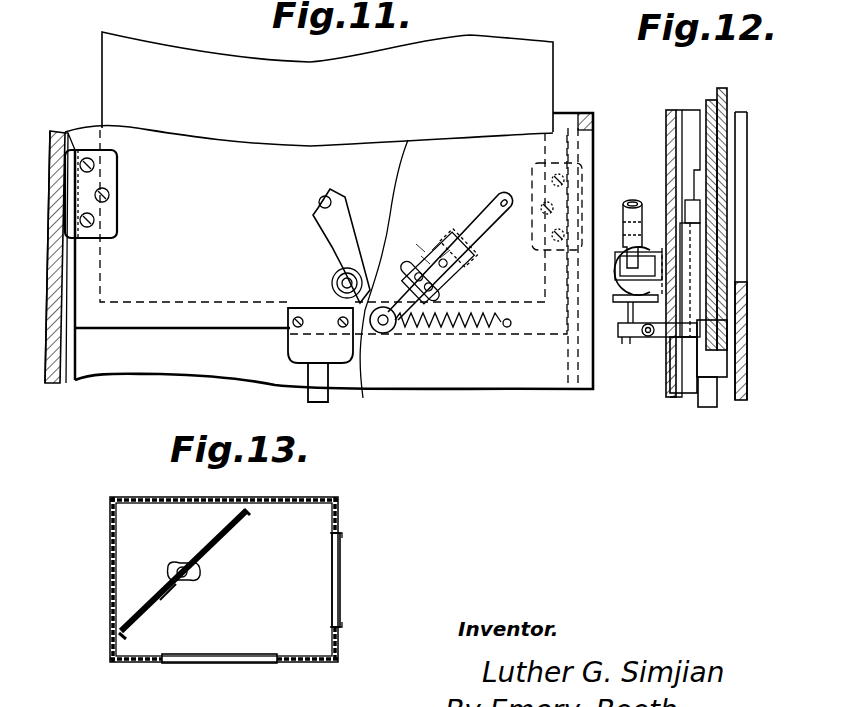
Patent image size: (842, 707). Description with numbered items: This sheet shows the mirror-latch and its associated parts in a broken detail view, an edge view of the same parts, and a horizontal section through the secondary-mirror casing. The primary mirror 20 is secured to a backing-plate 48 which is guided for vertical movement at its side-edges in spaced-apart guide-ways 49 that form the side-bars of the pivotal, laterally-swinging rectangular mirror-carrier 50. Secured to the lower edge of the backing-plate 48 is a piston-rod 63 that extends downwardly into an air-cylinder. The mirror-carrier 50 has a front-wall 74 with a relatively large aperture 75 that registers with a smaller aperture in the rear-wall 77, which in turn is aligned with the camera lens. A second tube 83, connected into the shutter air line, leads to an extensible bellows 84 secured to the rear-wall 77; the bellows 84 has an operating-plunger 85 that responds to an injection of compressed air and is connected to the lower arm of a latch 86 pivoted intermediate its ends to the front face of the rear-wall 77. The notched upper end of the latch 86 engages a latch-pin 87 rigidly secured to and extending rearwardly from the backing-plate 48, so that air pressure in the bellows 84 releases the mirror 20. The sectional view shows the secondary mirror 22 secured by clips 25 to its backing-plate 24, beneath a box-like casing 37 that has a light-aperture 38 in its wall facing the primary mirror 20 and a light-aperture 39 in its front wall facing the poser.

In FIG. 11, the primary mirror 20 is at (542, 71).
In FIG. 12, the primary mirror 20 is at (725, 154).
In FIG. 13, the secondary mirror 22 is at (162, 597).
In FIG. 13, the backing-plate 24 is at (166, 587).
In FIG. 13, the clips 25 is at (185, 563).
In FIG. 13, the box-like casing 37 is at (310, 500).
In FIG. 13, the light-aperture 38 is at (341, 563).
In FIG. 13, the light-aperture 39 is at (238, 660).
In FIG. 11, the backing-plate 48 is at (282, 157).
In FIG. 12, the backing-plate 48 is at (716, 106).
In FIG. 11, the guide-ways 49 is at (75, 132).
In FIG. 11, the mirror-carrier 50 is at (55, 284).
In FIG. 11, the piston-rod 63 is at (322, 393).
In FIG. 12, the piston-rod 63 is at (718, 397).
In FIG. 12, the front-wall 74 is at (747, 311).
In FIG. 12, the aperture 75 is at (740, 257).
In FIG. 11, the rear-wall 77 is at (527, 380).
In FIG. 12, the rear-wall 77 is at (668, 160).
In FIG. 11, the second tube 83 is at (502, 208).
In FIG. 12, the second tube 83 is at (641, 205).
In FIG. 11, the extensible bellows 84 is at (452, 282).
In FIG. 12, the extensible bellows 84 is at (613, 255).
In FIG. 11, the operating-plunger 85 is at (390, 312).
In FIG. 12, the operating-plunger 85 is at (622, 312).
In FIG. 11, the latch 86 is at (342, 304).
In FIG. 12, the latch 86 is at (692, 312).
In FIG. 11, the latch-pin 87 is at (319, 202).
In FIG. 12, the latch-pin 87 is at (686, 207).